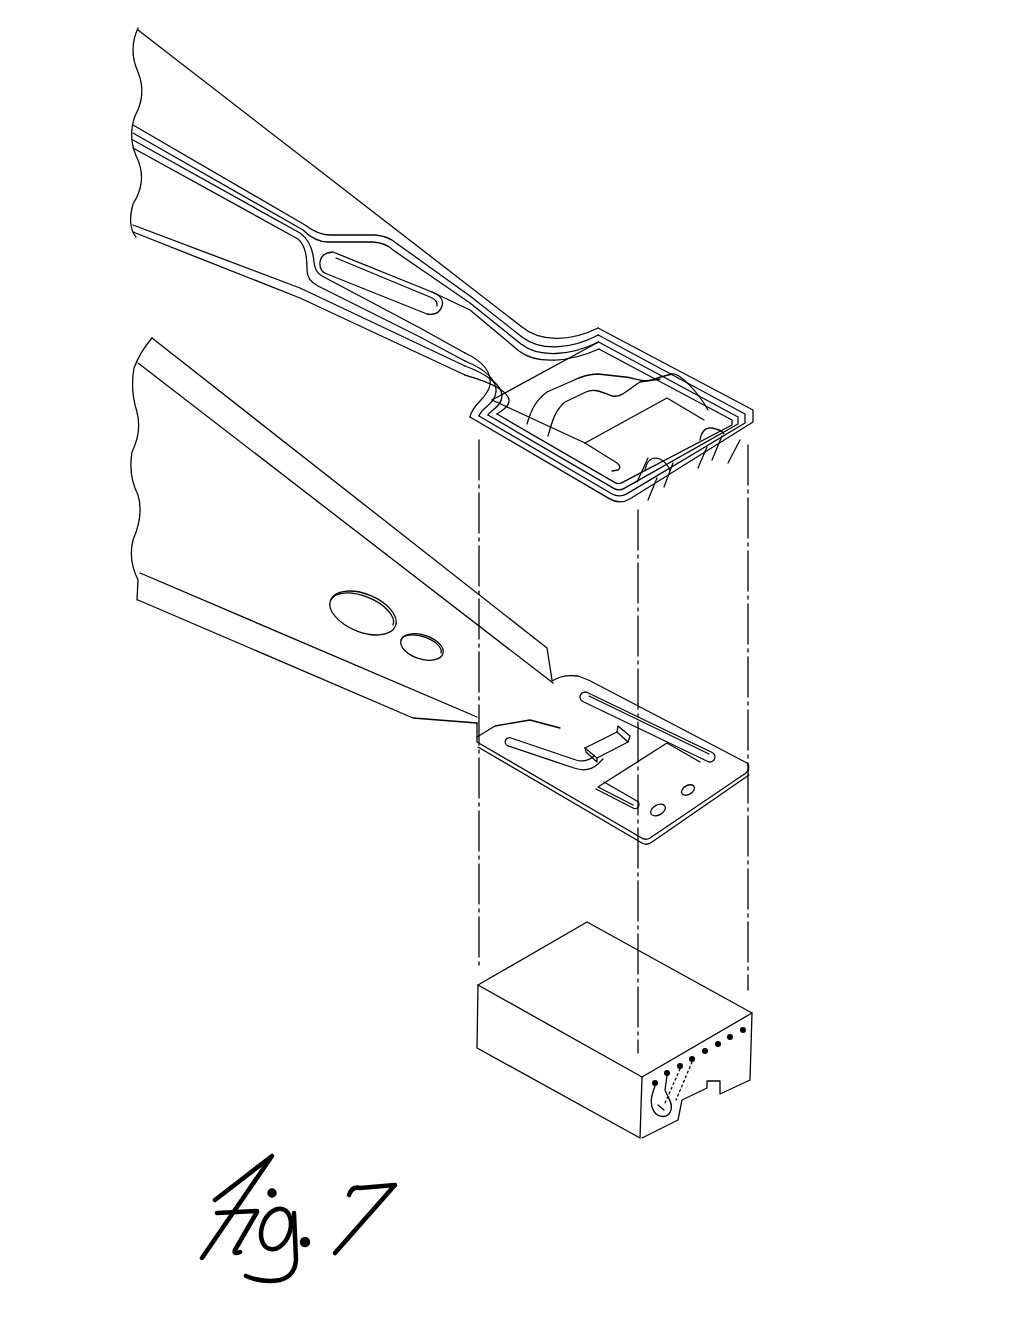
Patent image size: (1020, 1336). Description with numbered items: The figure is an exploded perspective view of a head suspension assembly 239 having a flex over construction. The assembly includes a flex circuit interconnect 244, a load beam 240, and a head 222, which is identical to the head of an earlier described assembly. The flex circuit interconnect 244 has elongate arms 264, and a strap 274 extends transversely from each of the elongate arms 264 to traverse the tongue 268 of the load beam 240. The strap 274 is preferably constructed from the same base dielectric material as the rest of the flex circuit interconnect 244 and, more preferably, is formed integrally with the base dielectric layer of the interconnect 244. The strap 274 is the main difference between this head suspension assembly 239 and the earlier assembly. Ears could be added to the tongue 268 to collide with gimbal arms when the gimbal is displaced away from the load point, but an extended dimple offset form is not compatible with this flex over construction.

The head suspension assembly 239 is at (456, 266).
The flex circuit interconnect 244 is at (365, 222).
The elongate arms 264 is at (626, 429).
The strap 274 is at (617, 353).
The load beam 240 is at (438, 591).
The tongue 268 is at (546, 760).
The head 222 is at (570, 1030).